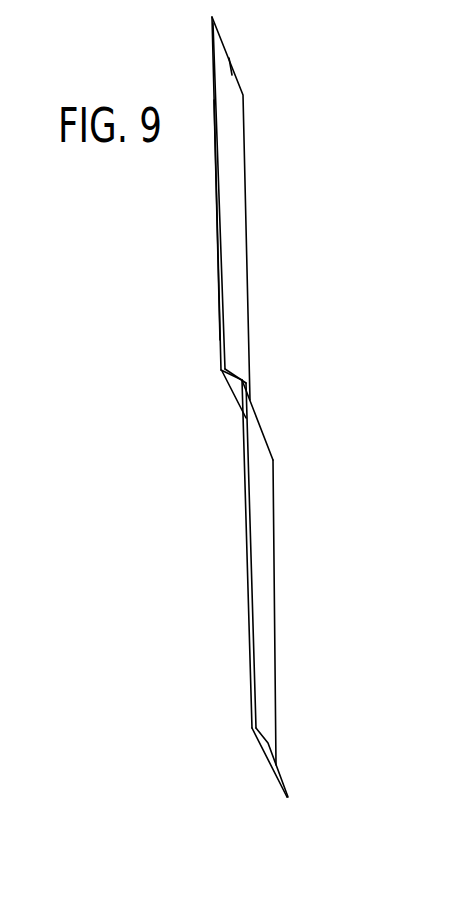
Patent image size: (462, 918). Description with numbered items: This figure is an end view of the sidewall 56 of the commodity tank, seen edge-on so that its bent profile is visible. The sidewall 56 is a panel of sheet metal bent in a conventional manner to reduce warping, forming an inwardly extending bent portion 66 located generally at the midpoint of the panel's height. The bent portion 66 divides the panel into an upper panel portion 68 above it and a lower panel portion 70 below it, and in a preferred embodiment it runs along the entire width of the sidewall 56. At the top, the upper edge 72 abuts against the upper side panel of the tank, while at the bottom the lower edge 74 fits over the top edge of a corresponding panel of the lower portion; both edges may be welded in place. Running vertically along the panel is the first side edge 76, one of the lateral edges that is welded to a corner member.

The sidewall 56 is at (195, 258).
The bent portion 66 is at (235, 374).
The upper panel portion 68 is at (235, 237).
The lower panel portion 70 is at (264, 594).
The upper edge 72 is at (227, 53).
The lower edge 74 is at (278, 776).
The first side edge 76 is at (221, 318).